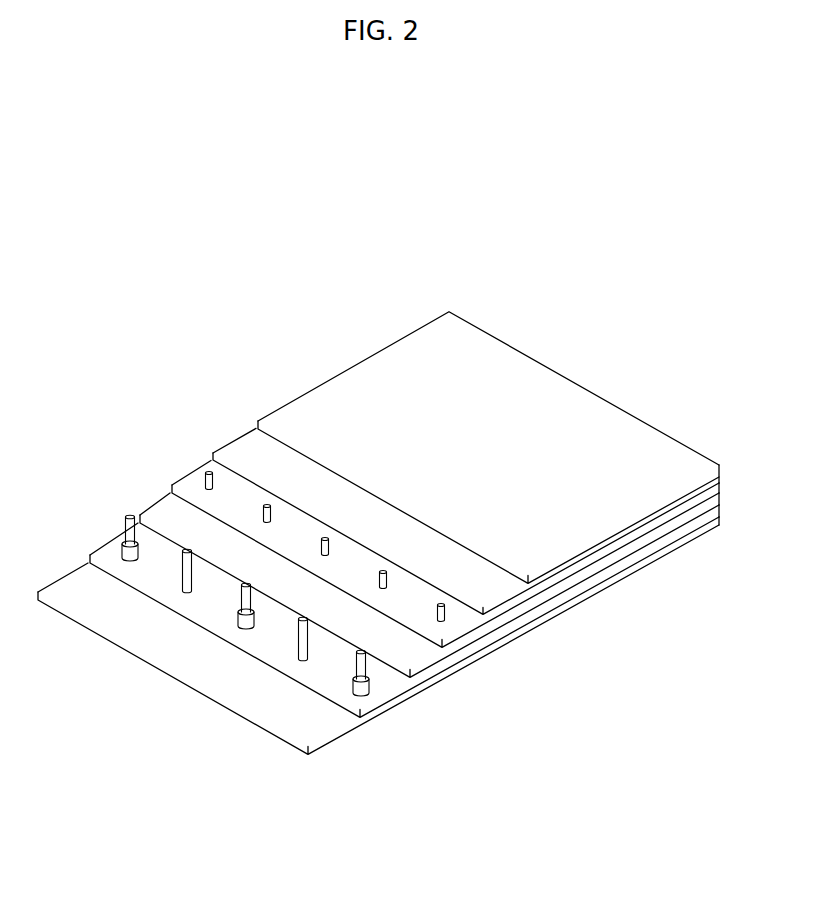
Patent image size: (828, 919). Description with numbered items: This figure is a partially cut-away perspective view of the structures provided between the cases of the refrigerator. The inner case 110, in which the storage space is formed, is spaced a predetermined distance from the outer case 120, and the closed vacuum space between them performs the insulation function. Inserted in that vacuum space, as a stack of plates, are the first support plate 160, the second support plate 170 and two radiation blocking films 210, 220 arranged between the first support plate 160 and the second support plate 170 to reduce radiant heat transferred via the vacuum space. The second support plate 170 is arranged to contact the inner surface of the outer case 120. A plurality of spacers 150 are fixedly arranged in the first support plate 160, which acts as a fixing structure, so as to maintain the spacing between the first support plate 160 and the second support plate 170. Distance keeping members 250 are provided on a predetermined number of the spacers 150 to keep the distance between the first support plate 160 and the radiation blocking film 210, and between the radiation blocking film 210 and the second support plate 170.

The inner case 110 is at (130, 628).
The outer case 120 is at (572, 400).
The spacer 150 is at (298, 648).
The first support plate 160 is at (253, 635).
The second support plate 170 is at (493, 592).
The radiation blocking film 210 is at (420, 653).
The radiation blocking film 220 is at (457, 625).
The distance keeping member 250 is at (367, 694).